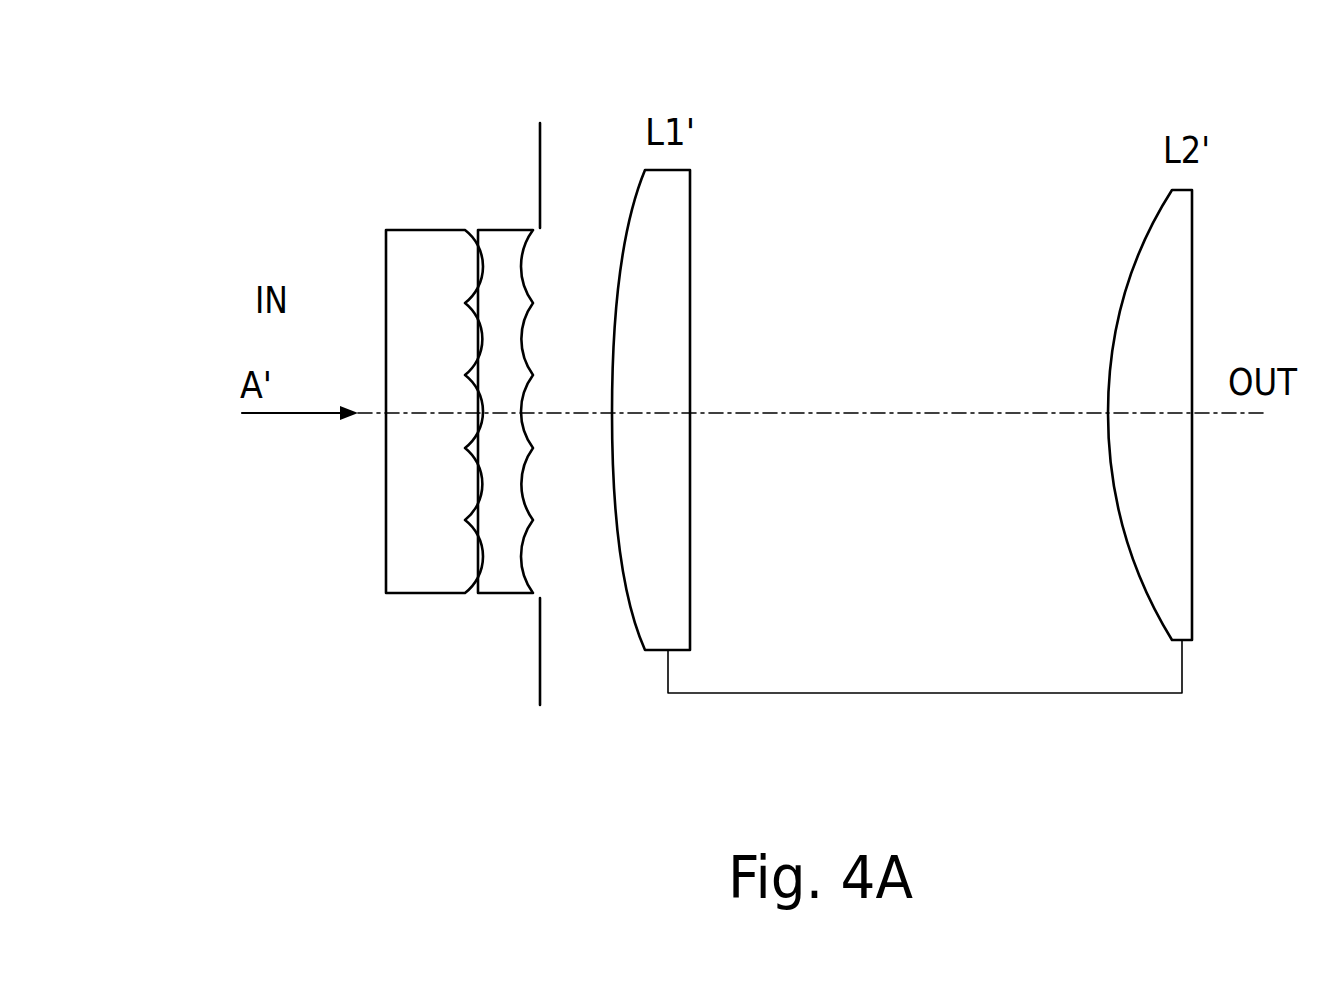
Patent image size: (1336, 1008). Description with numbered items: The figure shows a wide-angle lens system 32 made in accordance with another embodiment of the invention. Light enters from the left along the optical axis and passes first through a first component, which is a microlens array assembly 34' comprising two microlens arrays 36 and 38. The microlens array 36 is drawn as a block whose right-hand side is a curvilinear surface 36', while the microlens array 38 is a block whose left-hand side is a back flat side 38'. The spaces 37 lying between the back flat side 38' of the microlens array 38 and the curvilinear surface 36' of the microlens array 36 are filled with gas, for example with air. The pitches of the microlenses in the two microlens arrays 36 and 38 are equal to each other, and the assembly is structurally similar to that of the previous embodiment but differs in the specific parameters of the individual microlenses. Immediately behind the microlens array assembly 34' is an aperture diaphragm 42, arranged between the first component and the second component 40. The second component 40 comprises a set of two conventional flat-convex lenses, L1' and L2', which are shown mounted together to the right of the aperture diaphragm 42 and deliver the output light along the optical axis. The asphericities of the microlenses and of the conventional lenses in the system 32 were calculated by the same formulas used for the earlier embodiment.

The wide-angle lens system 32 is at (962, 131).
The microlens array 36 is at (406, 321).
The spaces 37 is at (462, 265).
The microlens array 38 is at (508, 321).
The curvilinear surface 36' is at (414, 599).
The back flat side 38' is at (447, 617).
The microlens array assembly 34' is at (511, 458).
The aperture diaphragm 42 is at (545, 648).
The second component 40 is at (1048, 695).